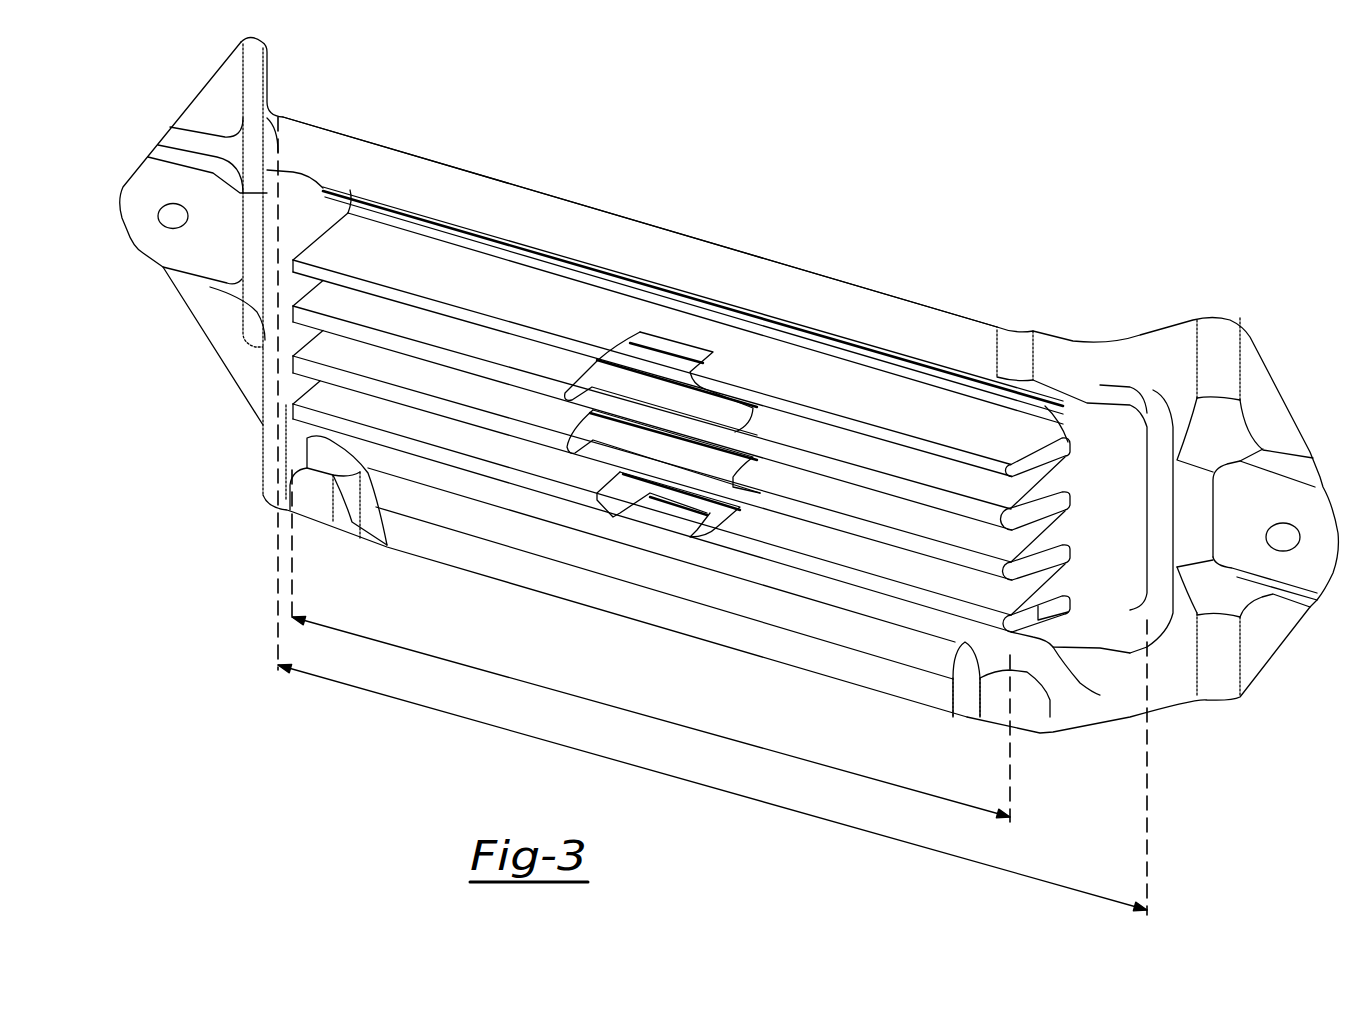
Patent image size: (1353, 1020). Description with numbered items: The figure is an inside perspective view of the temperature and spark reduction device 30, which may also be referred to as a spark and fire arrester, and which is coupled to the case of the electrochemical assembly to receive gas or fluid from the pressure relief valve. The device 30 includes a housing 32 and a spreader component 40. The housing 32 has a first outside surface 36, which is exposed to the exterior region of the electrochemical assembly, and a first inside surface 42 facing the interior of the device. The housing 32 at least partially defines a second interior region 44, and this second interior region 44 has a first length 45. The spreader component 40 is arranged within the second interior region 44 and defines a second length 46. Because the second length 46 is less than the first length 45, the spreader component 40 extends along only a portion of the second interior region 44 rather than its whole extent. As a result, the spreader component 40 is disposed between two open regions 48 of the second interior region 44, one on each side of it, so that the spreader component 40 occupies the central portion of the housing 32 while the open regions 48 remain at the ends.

The temperature and spark reduction device 30 is at (182, 75).
The housing 32 is at (1217, 357).
The first outside surface 36 is at (587, 200).
The spreader component 40 is at (870, 410).
The first inside surface 42 is at (1112, 487).
The second interior region 44 is at (298, 223).
The first length 45 is at (727, 793).
The second length 46 is at (653, 717).
The open regions 48 is at (290, 330).